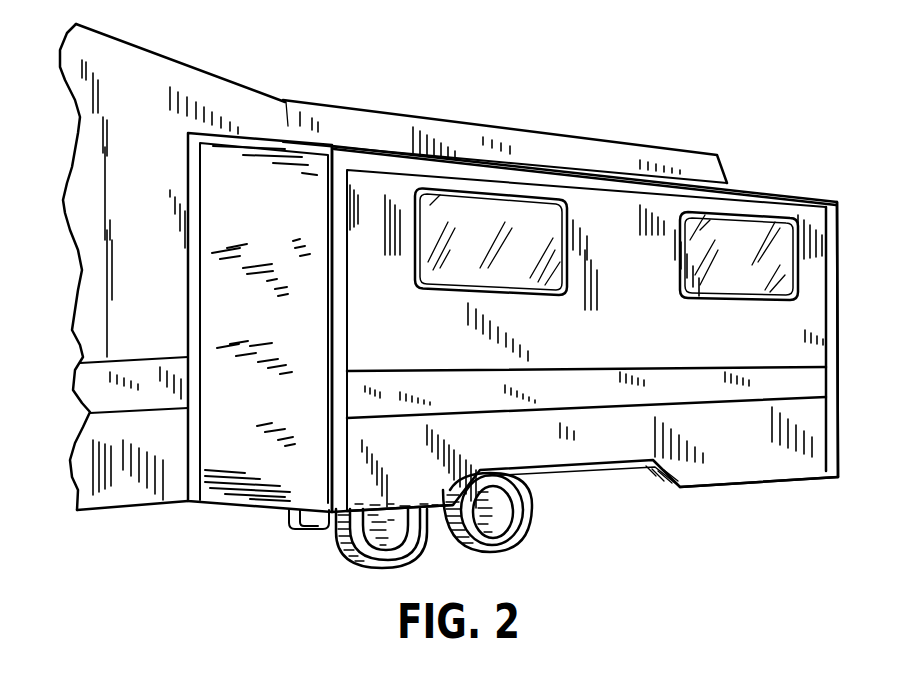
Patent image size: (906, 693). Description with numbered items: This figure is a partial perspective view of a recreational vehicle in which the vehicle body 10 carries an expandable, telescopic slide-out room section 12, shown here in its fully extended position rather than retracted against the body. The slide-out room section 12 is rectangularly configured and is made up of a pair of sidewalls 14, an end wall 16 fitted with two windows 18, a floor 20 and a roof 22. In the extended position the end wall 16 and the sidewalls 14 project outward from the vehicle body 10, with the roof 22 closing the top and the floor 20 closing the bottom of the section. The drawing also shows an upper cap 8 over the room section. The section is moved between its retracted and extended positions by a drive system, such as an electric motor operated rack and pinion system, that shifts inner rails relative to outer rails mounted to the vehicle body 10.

The roof cap 8 is at (619, 129).
The vehicle body 10 is at (170, 323).
The slide-out room section 12 is at (797, 194).
The sidewalls 14 is at (265, 452).
The end wall 16 is at (630, 390).
The windows 18 is at (567, 296).
The floor 20 is at (737, 483).
The roof 22 is at (433, 158).